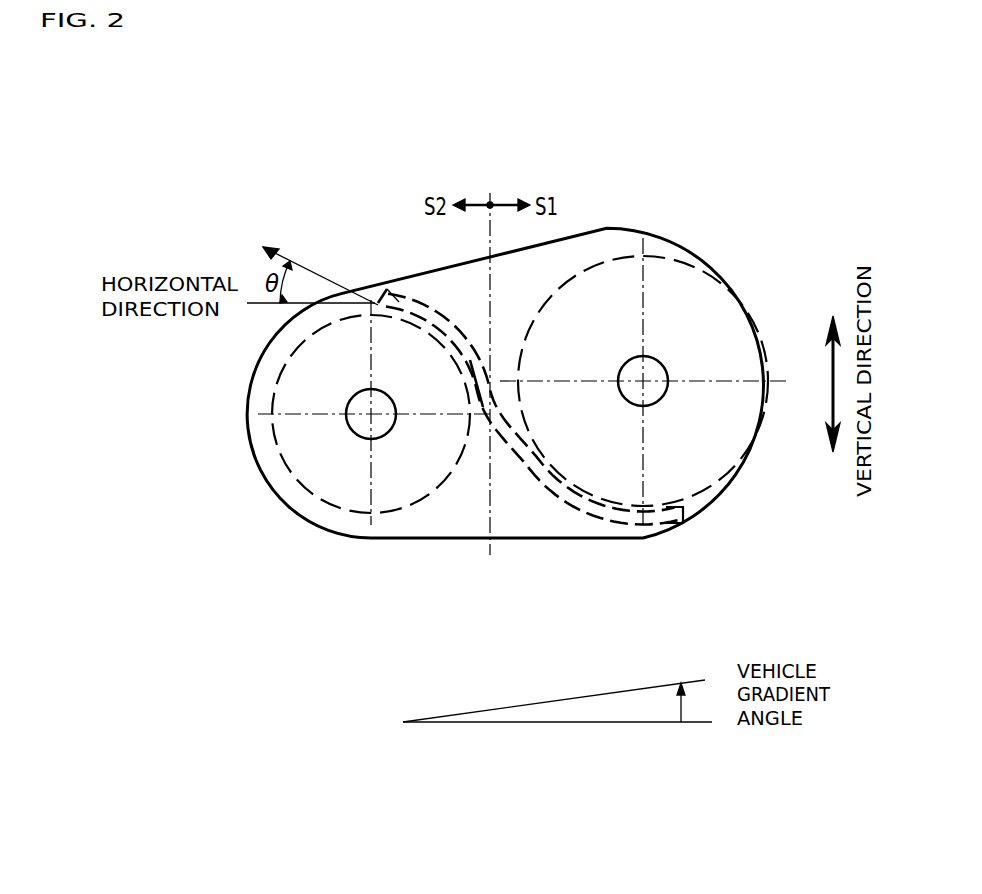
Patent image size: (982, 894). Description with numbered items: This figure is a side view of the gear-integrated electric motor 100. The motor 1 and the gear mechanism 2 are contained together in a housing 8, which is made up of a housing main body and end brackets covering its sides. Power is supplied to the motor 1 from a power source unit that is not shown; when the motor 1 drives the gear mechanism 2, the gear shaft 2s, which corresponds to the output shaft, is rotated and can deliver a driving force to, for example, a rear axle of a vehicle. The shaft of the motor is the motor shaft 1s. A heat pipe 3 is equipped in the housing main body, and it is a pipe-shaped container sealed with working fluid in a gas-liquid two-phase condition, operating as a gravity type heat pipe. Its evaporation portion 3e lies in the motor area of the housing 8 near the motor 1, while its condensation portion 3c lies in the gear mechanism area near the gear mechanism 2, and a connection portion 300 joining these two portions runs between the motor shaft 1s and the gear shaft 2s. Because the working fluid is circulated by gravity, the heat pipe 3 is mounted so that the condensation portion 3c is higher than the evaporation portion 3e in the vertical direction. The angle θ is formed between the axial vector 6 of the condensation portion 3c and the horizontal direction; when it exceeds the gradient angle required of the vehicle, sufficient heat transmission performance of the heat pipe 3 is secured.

The gear-integrated electric motor 100 is at (543, 104).
The housing 8 is at (663, 226).
The motor 1 is at (715, 308).
The motor shaft 1s is at (662, 400).
The gear mechanism 2 is at (297, 403).
The gear shaft 2s is at (353, 433).
The heat pipe 3 is at (524, 474).
The condensation portion 3c is at (400, 307).
The evaporation portion 3e is at (663, 516).
The connection portion 300 is at (500, 423).
The axial vector 6 is at (278, 257).